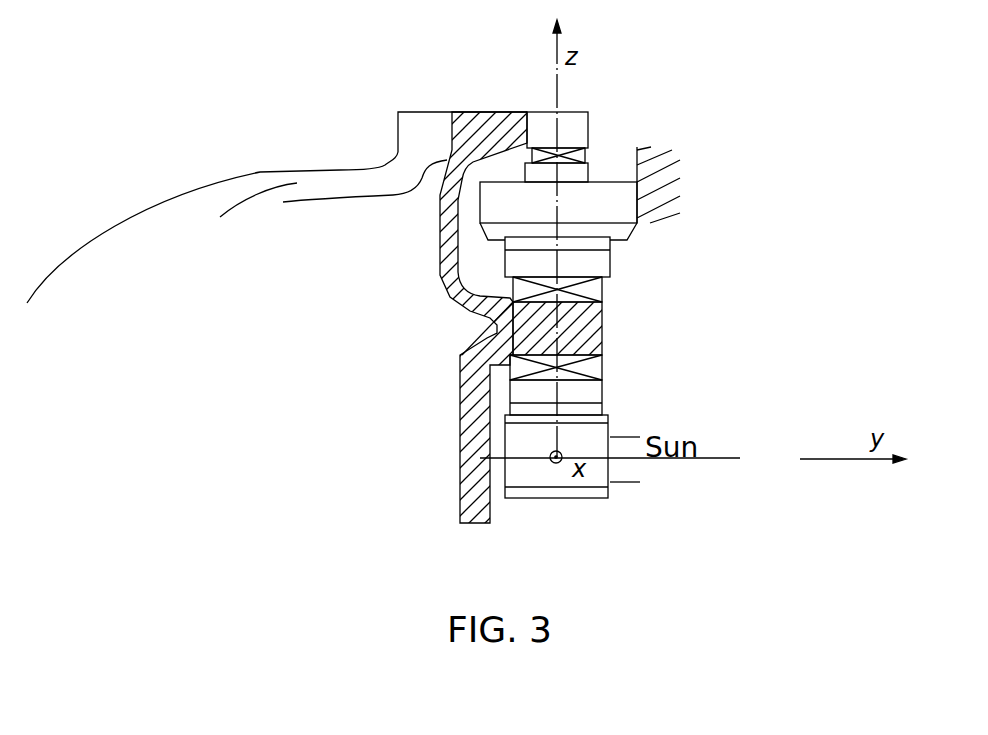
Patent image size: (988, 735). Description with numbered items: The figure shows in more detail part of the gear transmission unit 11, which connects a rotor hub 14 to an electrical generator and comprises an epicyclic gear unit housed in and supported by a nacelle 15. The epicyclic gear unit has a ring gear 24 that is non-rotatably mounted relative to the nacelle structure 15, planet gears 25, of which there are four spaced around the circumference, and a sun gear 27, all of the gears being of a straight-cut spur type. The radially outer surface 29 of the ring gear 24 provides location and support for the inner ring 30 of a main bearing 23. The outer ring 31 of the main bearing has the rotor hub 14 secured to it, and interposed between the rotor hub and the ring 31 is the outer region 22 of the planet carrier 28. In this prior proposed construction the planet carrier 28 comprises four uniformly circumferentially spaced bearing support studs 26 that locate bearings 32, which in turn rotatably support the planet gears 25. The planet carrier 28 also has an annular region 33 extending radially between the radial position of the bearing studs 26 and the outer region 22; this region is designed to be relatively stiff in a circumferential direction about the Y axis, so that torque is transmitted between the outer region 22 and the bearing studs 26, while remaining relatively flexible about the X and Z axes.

The gear transmission unit 11 is at (798, 114).
The rotor hub 14 is at (183, 236).
The nacelle 15 is at (657, 177).
The outer region of the planet carrier 22 is at (476, 120).
The main bearing 23 is at (583, 156).
The ring gear 24 is at (596, 210).
The planet gears 25 is at (612, 265).
The bearing support studs 26 is at (586, 328).
The sun gear 27 is at (528, 477).
The planet carrier 28 is at (426, 268).
The radially outer surface of the ring gear 29 is at (632, 177).
The inner ring of the main bearing 30 is at (606, 178).
The outer ring of the main bearing 31 is at (545, 117).
The bearings 32 is at (603, 290).
The annular region of the planet carrier 33 is at (440, 205).